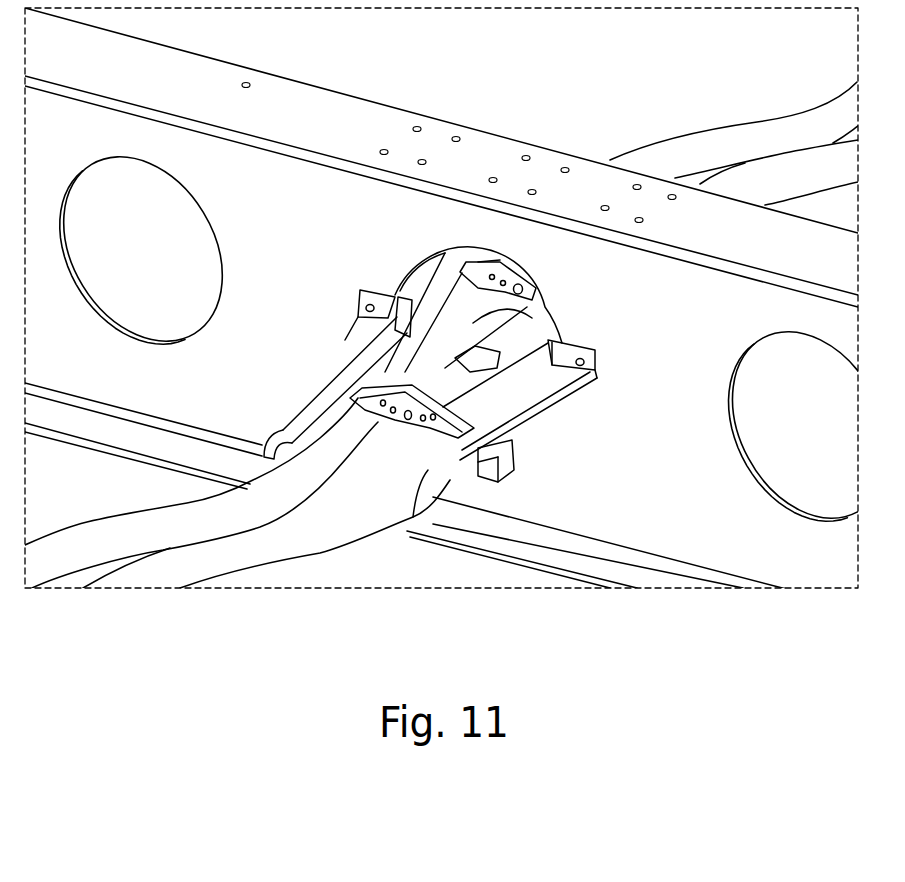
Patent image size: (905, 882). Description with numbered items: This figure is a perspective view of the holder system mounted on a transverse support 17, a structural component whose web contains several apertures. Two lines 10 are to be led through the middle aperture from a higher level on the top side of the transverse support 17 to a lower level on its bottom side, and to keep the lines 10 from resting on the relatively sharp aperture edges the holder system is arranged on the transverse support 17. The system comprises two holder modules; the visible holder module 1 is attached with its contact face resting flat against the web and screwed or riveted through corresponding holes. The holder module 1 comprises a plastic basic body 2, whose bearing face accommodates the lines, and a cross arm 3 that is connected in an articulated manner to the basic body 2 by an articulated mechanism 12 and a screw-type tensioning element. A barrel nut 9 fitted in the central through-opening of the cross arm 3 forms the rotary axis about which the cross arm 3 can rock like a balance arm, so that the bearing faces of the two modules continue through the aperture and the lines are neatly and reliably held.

The holder module 1 is at (542, 421).
The basic body 2 is at (437, 485).
The cross arm 3 is at (391, 389).
The barrel nut 9 is at (413, 427).
The lines 10 is at (787, 161).
The articulated mechanism 12 is at (237, 493).
The transverse support 17 is at (320, 112).